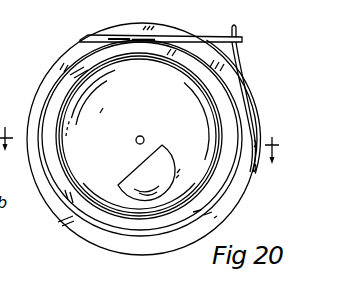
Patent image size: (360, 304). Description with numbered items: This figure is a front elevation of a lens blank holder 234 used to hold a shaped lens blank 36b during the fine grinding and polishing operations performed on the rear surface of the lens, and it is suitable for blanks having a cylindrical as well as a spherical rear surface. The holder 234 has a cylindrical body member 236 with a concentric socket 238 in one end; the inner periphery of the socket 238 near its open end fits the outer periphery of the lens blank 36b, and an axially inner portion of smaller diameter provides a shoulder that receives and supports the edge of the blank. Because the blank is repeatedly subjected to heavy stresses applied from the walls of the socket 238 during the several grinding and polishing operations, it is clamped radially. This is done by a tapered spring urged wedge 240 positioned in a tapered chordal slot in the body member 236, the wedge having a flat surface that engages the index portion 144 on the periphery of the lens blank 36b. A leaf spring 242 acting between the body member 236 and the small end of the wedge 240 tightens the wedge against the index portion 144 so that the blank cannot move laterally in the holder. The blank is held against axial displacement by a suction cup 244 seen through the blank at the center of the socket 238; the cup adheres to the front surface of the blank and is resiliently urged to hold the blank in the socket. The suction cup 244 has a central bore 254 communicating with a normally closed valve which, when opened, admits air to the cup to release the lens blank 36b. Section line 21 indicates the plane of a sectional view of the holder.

The section line 21 is at (147, 145).
The lens blank 36b is at (225, 115).
The index portion 144 is at (132, 43).
The holder 234 is at (86, 247).
The cylindrical body member 236 is at (73, 54).
The socket 238 is at (144, 223).
The tapered spring urged wedge 240 is at (172, 38).
The leaf spring 242 is at (247, 77).
The suction cup 244 is at (110, 190).
The central bore 254 is at (144, 138).